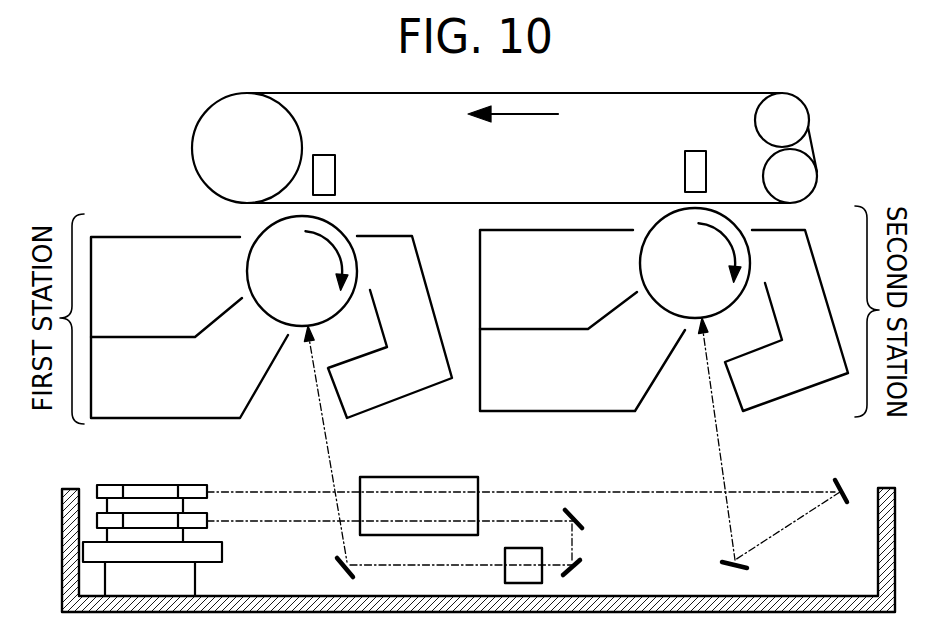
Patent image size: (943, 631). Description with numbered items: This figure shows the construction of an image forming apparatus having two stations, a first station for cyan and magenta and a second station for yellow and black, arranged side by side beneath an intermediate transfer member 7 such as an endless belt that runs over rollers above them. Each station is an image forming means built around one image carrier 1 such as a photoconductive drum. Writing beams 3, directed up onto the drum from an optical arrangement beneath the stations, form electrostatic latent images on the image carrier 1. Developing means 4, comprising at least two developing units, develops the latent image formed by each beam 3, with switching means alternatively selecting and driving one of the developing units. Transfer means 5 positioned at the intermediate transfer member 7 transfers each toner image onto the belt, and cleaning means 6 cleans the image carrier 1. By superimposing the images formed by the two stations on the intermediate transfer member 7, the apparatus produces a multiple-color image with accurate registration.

The image carrier 1 is at (246, 268).
The writing beams 3 is at (326, 438).
The developing means 4 is at (170, 418).
The transfer means 5 is at (337, 175).
The cleaning means 6 is at (413, 272).
The intermediate transfer member 7 is at (663, 93).